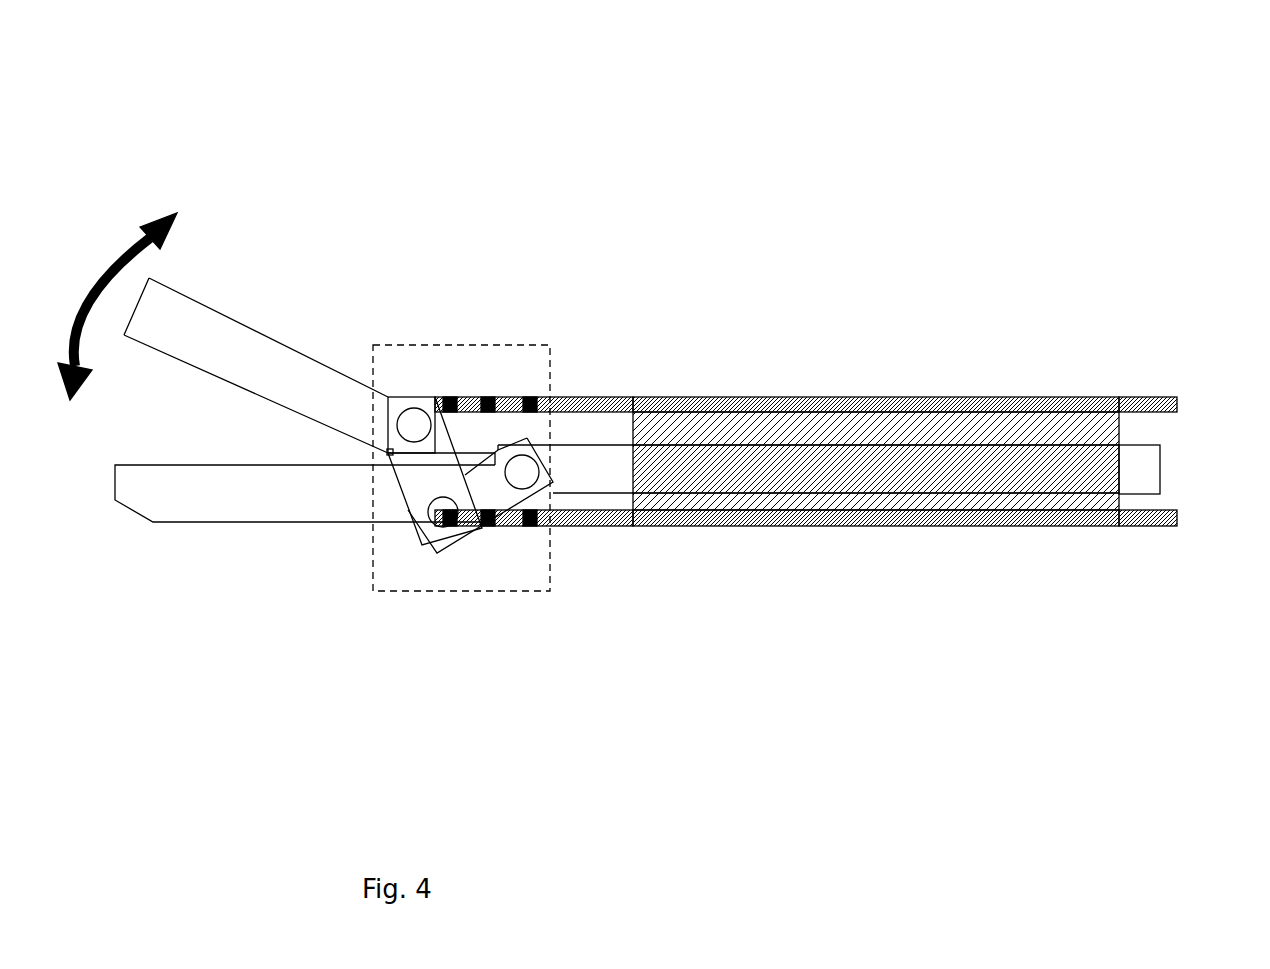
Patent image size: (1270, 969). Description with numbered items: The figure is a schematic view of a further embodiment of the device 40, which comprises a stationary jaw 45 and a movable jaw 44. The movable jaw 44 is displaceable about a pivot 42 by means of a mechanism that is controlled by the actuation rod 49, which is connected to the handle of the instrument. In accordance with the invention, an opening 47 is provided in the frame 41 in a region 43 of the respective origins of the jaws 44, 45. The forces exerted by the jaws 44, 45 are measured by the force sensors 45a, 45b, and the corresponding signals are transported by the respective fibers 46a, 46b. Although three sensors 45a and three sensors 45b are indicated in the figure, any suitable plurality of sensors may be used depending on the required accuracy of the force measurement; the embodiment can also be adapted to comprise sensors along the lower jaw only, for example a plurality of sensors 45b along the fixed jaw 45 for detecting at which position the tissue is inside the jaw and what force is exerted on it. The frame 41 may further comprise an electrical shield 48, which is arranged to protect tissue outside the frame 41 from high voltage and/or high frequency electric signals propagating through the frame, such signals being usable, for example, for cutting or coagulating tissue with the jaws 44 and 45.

The device 40 is at (545, 70).
The frame 41 is at (573, 427).
The pivot 42 is at (411, 418).
The region 43 is at (400, 592).
The movable jaw 44 is at (197, 300).
The stationary jaw 45 is at (153, 522).
The force sensors 45a is at (530, 397).
The force sensors 45b is at (450, 527).
The fiber 46a is at (1160, 402).
The fiber 46b is at (1172, 525).
The opening 47 is at (420, 462).
The electrical shield 48 is at (867, 425).
The actuation rod 49 is at (1160, 473).